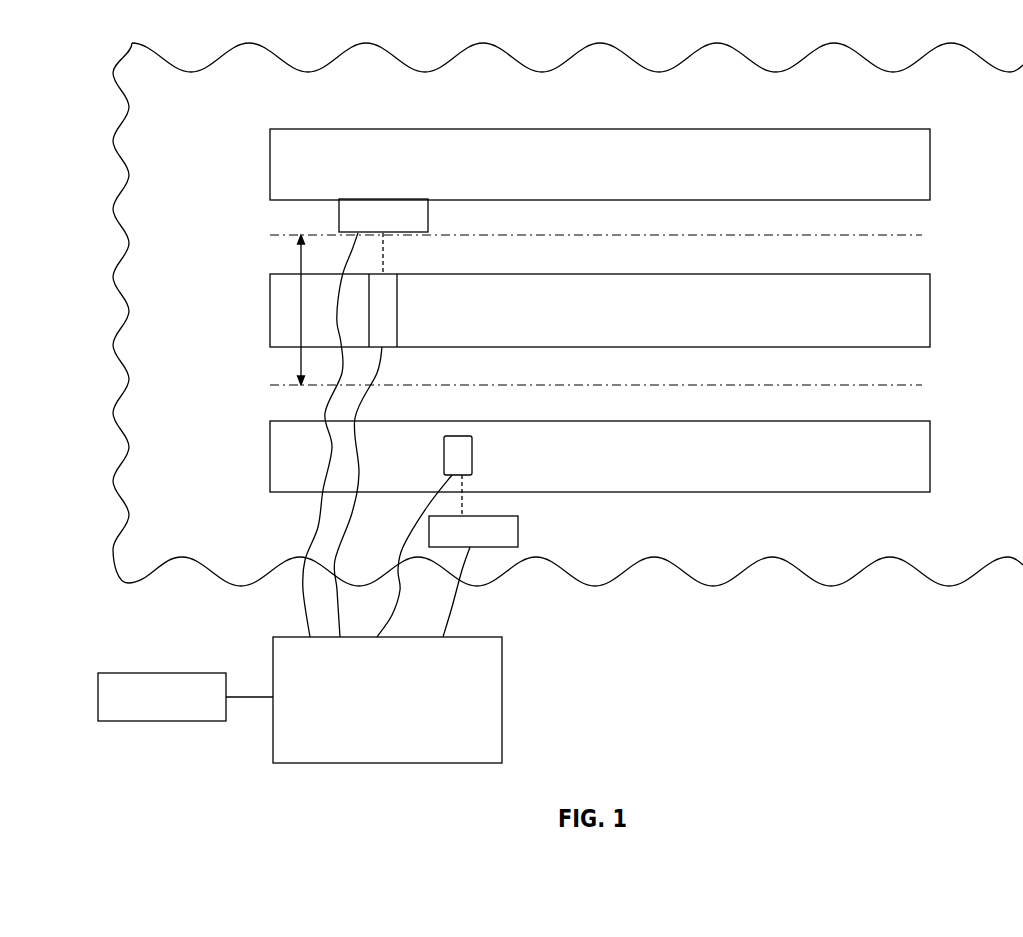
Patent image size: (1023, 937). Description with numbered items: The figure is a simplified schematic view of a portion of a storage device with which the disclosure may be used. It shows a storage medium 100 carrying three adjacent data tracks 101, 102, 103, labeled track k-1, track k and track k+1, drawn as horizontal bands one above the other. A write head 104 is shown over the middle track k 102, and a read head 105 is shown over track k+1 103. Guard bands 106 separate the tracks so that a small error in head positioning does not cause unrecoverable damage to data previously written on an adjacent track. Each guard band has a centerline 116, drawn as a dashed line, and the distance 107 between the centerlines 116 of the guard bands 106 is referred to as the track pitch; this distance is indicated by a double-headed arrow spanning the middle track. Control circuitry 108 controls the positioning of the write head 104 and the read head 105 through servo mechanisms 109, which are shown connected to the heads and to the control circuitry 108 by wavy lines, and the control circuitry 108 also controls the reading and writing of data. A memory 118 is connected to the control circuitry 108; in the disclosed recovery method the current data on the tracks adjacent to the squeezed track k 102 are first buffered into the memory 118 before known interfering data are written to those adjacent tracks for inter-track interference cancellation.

The storage medium 100 is at (248, 40).
The data track 101 is at (931, 164).
The data track 102 is at (929, 312).
The data track 103 is at (929, 458).
The write head 104 is at (387, 308).
The read head 105 is at (458, 455).
The guard bands 106 is at (265, 193).
The distance 107 is at (300, 318).
The control circuitry 108 is at (457, 637).
The servo mechanisms 109 is at (428, 222).
The centerlines 116 is at (862, 237).
The memory 118 is at (156, 673).